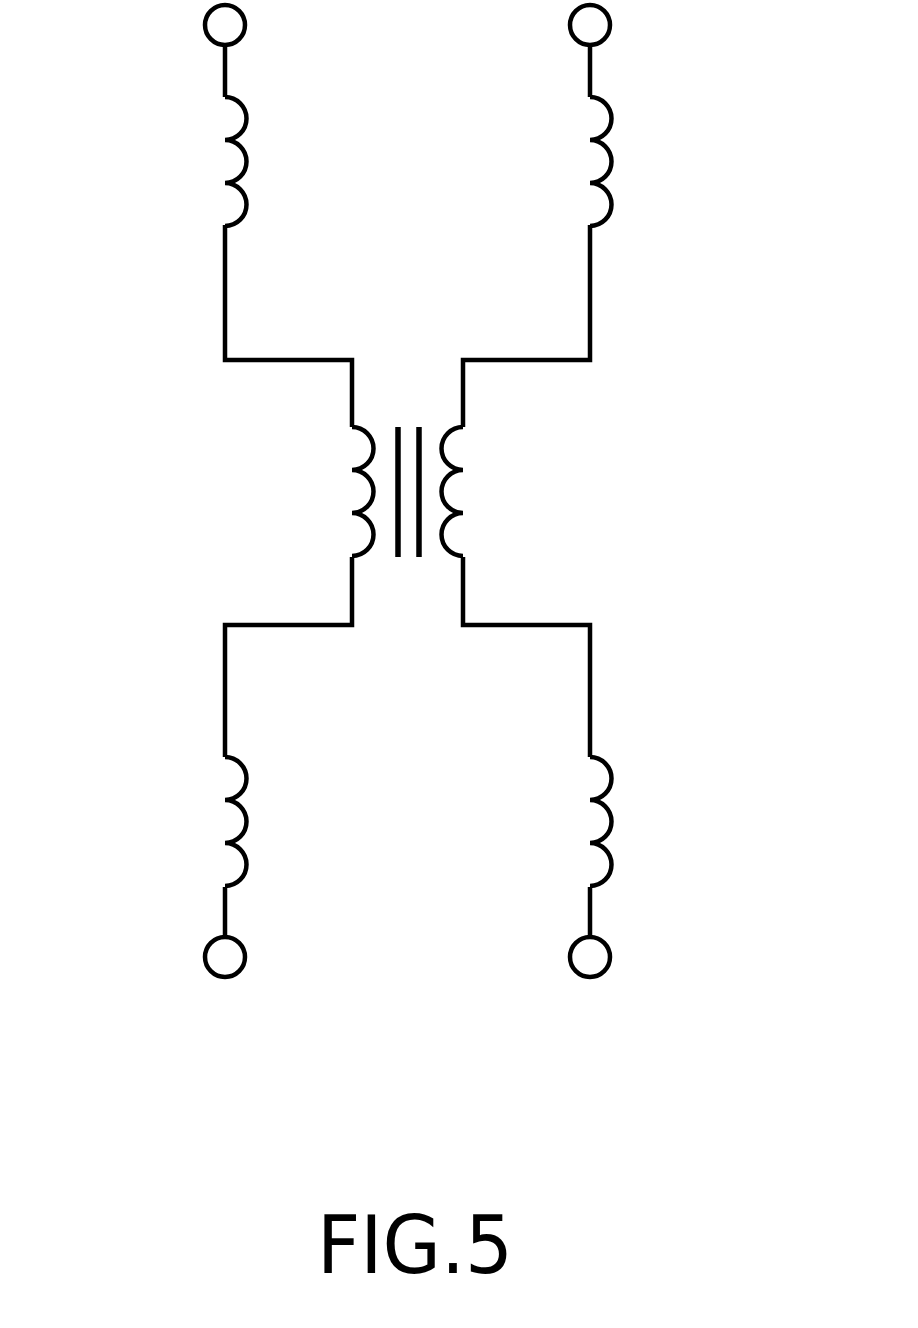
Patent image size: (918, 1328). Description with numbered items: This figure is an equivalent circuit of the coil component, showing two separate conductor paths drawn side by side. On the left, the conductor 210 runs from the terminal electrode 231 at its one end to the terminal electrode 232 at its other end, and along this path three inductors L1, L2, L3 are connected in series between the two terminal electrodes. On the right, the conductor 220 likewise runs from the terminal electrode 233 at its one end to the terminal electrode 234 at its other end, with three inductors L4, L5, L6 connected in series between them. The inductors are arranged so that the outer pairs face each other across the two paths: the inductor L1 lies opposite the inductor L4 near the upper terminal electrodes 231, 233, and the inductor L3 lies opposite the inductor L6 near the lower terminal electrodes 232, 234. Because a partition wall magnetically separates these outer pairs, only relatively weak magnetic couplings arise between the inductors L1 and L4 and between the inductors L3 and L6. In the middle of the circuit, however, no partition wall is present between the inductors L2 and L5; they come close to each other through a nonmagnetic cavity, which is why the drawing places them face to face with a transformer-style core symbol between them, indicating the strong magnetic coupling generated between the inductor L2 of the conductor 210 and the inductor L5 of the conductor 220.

The terminal electrode 231 is at (205, 25).
The terminal electrode 232 is at (205, 957).
The terminal electrode 233 is at (610, 22).
The terminal electrode 234 is at (610, 957).
The conductor 210 is at (225, 308).
The conductor 220 is at (590, 302).
The inductor L1 is at (226, 141).
The inductor L2 is at (355, 470).
The inductor L3 is at (226, 800).
The inductor L4 is at (613, 155).
The inductor L5 is at (450, 513).
The inductor L6 is at (613, 815).